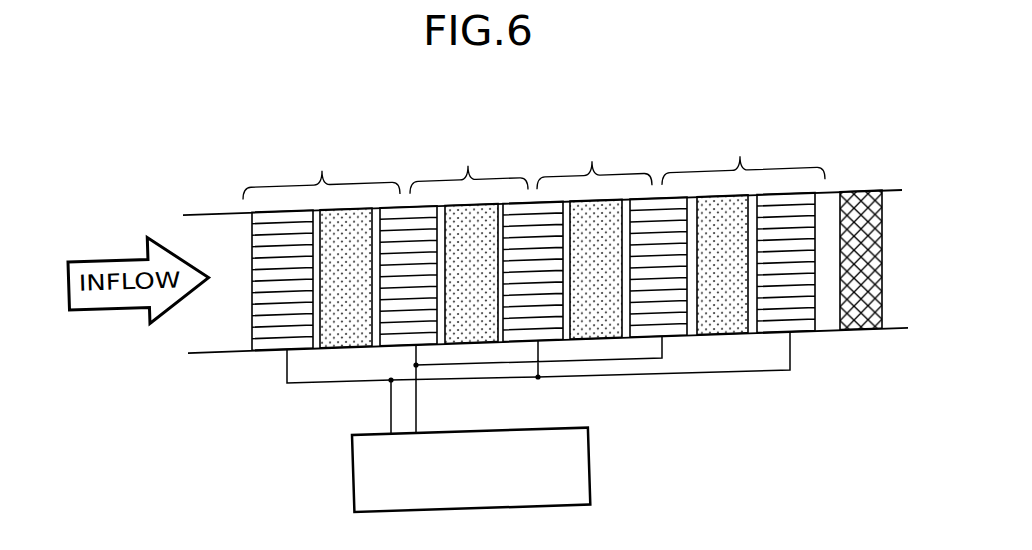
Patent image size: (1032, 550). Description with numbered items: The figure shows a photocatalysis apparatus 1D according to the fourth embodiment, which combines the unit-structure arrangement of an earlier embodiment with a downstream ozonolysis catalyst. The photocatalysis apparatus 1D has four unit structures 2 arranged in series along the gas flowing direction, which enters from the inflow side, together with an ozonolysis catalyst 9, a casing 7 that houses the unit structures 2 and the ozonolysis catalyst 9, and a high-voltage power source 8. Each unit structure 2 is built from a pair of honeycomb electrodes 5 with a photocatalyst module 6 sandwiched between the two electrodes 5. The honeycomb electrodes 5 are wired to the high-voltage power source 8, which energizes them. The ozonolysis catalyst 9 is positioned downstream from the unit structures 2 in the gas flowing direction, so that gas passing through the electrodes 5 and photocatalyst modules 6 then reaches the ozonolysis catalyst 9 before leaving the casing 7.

The photocatalysis apparatus 1D is at (188, 150).
The unit structure 2 is at (534, 237).
The honeycomb electrode 5 is at (773, 337).
The photocatalyst module 6 is at (345, 348).
The casing 7 is at (693, 337).
The high-voltage power source 8 is at (592, 463).
The ozonolysis catalyst 9 is at (867, 332).